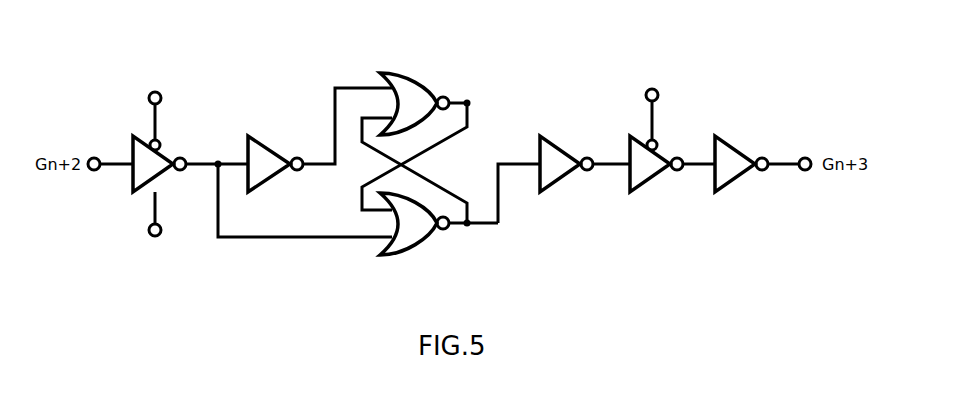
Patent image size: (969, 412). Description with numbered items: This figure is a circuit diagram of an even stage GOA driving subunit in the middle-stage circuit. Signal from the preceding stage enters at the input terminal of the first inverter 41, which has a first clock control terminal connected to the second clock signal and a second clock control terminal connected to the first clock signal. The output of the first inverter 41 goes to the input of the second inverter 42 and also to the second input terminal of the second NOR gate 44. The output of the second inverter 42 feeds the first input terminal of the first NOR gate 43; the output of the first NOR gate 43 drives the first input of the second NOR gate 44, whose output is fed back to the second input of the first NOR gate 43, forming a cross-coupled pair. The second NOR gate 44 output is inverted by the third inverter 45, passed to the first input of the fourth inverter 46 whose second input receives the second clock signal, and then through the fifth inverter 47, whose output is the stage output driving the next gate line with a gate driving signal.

The first inverter 41 is at (130, 143).
The second inverter 42 is at (268, 140).
The first NOR gate 43 is at (403, 73).
The second NOR gate 44 is at (425, 250).
The third inverter 45 is at (557, 132).
The fourth inverter 46 is at (650, 182).
The fifth inverter 47 is at (743, 135).